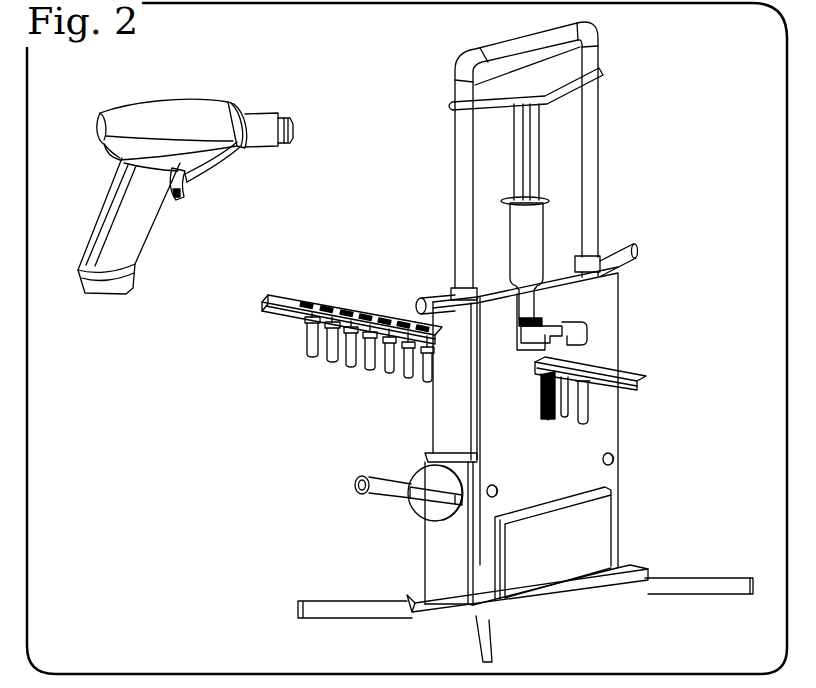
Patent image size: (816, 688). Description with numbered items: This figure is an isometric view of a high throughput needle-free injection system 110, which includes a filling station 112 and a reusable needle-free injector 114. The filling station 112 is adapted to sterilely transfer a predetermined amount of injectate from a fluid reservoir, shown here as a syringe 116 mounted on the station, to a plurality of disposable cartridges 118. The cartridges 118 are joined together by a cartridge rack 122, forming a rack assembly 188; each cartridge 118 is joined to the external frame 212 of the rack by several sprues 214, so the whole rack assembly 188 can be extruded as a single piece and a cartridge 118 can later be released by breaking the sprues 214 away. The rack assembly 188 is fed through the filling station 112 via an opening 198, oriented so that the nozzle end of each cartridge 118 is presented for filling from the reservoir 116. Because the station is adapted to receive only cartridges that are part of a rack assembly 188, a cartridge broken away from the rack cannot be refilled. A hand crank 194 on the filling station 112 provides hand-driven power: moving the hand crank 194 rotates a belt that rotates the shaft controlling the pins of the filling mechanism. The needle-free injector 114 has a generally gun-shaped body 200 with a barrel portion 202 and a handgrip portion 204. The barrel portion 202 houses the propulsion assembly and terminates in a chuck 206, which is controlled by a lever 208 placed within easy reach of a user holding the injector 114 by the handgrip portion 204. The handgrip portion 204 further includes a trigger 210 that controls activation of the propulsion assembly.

The high throughput needle-free injection system 110 is at (525, 342).
The filling station 112 is at (615, 153).
The reusable needle-free injector 114 is at (209, 171).
The syringe 116 is at (552, 222).
The disposable cartridges 118 is at (366, 364).
The cartridge rack 122 is at (630, 376).
The rack assembly 188 is at (341, 325).
The hand crank 194 is at (368, 476).
The opening 198 is at (560, 360).
The gun-shaped body 200 is at (121, 108).
The barrel portion 202 is at (210, 101).
The handgrip portion 204 is at (98, 228).
The chuck 206 is at (296, 140).
The lever 208 is at (210, 172).
The trigger 210 is at (174, 197).
The external frame 212 is at (268, 308).
The sprues 214 is at (395, 320).